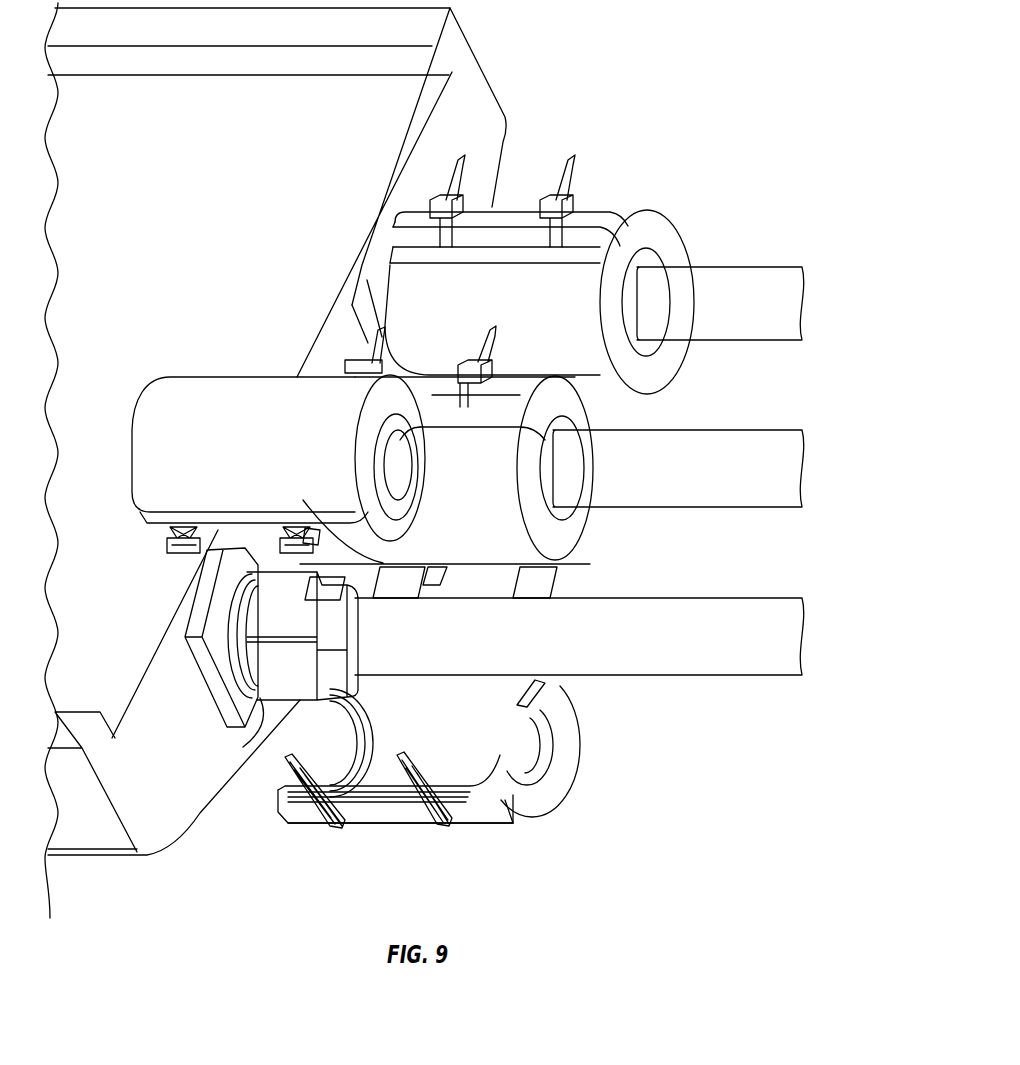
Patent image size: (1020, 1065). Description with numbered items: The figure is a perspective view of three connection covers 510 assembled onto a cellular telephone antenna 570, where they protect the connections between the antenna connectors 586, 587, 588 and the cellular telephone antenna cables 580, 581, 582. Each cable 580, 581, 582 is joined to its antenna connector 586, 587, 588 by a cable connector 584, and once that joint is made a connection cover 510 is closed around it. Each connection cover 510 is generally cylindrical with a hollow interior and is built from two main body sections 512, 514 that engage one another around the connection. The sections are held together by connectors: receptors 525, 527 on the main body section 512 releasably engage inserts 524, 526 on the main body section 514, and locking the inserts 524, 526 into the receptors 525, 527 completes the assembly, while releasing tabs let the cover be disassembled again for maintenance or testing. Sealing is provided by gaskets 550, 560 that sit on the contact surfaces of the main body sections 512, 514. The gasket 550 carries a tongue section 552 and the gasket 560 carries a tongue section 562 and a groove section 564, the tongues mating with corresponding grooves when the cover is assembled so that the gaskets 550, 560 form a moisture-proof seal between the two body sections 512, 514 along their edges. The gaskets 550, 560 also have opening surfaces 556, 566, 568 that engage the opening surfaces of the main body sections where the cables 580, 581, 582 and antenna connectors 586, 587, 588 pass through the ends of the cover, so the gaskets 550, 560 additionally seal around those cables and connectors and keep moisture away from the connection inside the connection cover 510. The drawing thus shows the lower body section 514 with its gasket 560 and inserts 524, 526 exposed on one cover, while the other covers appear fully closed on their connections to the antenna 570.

The connection cover 510 is at (541, 507).
The main body section 512 is at (245, 479).
The main body section 514 is at (457, 769).
The insert 524 is at (323, 830).
The receptor 525 is at (176, 556).
The insert 526 is at (434, 830).
The receptor 527 is at (290, 553).
The gasket 550 is at (446, 445).
The tongue section 552 is at (407, 445).
The opening surface 556 is at (392, 478).
The gasket 560 is at (578, 722).
The tongue section 562 is at (510, 823).
The groove section 564 is at (522, 700).
The opening surface 566 is at (578, 785).
The opening surface 568 is at (330, 777).
The cellular telephone antenna 570 is at (479, 55).
The cellular telephone antenna cable 580 is at (710, 266).
The cellular telephone antenna cable 581 is at (710, 432).
The cellular telephone antenna cable 582 is at (710, 598).
The cable connector 584 is at (258, 728).
The antenna connector 586 is at (230, 712).
The antenna connector 587 is at (315, 562).
The antenna connector 588 is at (372, 283).